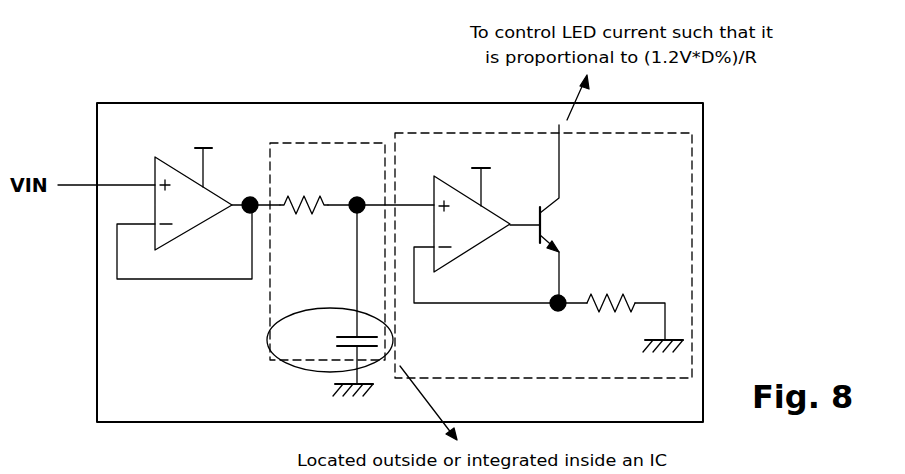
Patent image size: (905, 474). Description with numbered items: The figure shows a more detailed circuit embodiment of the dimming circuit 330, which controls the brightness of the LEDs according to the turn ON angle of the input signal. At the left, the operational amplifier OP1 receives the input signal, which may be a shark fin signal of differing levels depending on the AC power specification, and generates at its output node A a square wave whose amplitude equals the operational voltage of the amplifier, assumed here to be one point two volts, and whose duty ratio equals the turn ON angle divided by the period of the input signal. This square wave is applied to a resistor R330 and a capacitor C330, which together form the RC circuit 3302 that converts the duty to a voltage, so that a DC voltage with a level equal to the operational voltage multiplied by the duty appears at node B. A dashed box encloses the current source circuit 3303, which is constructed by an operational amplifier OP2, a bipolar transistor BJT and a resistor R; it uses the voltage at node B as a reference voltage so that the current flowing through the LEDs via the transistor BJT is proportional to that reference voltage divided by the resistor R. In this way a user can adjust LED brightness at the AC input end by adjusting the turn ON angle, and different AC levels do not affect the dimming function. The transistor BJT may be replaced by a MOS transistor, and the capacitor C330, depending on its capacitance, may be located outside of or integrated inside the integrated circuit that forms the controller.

The dimming circuit 330 is at (155, 408).
The duty to voltage conversion circuit 3302 is at (305, 269).
The current control circuit 3303 is at (460, 366).
The operational amplifier OP1 is at (178, 237).
The operational amplifier OP2 is at (462, 257).
The bipolar transistor BJT is at (558, 226).
The resistor R is at (624, 323).
The resistor R330 is at (304, 193).
The capacitor C330 is at (331, 304).